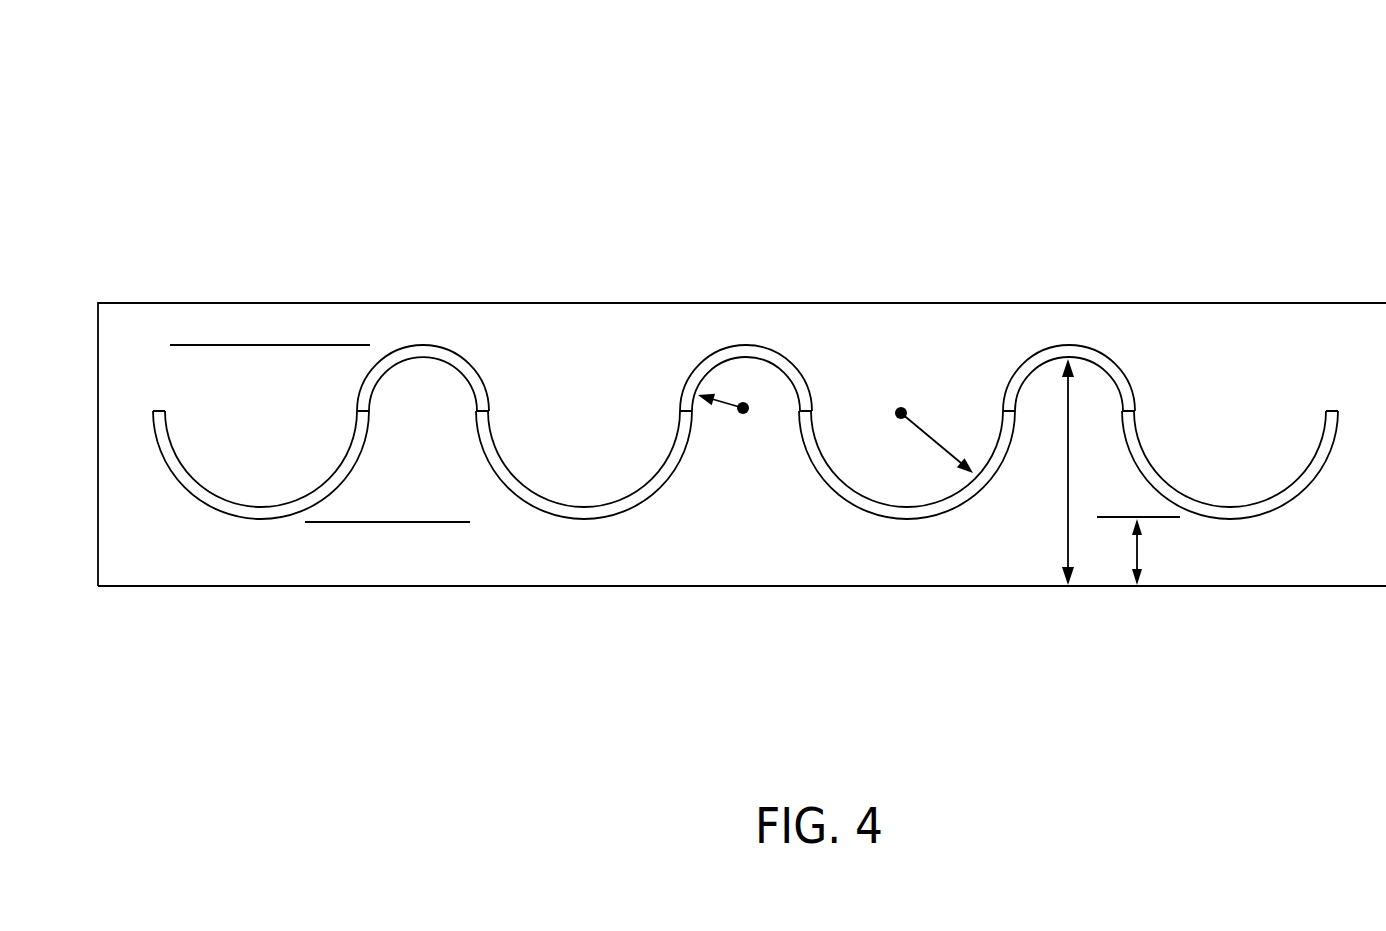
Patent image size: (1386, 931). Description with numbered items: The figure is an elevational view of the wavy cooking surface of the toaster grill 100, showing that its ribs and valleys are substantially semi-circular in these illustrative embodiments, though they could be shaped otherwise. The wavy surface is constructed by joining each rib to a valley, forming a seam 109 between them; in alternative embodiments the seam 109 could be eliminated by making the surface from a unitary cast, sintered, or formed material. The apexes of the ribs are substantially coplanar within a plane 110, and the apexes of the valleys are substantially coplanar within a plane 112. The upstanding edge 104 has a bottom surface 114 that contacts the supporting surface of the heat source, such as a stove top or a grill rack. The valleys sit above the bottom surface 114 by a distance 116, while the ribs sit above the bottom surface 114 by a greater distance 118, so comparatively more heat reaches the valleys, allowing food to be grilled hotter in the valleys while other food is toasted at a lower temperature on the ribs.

The toaster grill 100 is at (460, 131).
The upstanding edge 104 is at (910, 303).
The seam 109 is at (357, 412).
The rib apex plane 110 is at (280, 335).
The valley apex plane 112 is at (352, 528).
The bottom surface 114 is at (1008, 587).
The valley distance 116 is at (1110, 546).
The rib distance 118 is at (1045, 443).